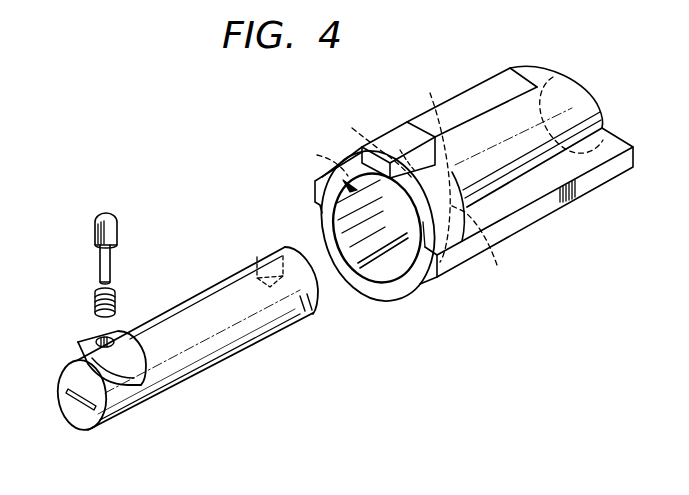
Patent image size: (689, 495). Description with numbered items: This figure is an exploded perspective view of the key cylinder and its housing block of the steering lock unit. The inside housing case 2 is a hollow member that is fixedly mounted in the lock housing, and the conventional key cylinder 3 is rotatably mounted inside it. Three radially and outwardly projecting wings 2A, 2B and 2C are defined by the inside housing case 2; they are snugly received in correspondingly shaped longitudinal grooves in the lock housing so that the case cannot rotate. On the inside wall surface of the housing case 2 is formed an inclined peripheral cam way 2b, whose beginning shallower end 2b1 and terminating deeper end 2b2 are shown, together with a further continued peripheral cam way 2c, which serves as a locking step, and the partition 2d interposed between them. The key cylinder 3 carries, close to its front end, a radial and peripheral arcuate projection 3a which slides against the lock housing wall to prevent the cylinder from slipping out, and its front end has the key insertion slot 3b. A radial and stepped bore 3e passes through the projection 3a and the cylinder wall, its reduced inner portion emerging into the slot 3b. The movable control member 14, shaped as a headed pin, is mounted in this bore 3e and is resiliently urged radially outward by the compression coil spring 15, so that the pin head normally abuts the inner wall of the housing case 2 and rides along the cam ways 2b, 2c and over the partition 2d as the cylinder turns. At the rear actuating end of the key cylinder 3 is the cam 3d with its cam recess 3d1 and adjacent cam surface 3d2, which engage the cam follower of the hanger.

The inside housing case 2 is at (493, 72).
The wing 2A is at (315, 197).
The wing 2B is at (428, 268).
The wing 2C is at (382, 143).
The inclined peripheral cam way 2b is at (320, 158).
The beginning shallower end of cam way 2b1 is at (366, 145).
The terminating deeper end of cam way 2b2 is at (487, 248).
The peripheral cam way 2c is at (434, 163).
The partition 2d is at (395, 152).
The key cylinder 3 is at (217, 361).
The radial and peripheral projection 3a is at (132, 370).
The key insertion slot 3b is at (84, 410).
The cam 3d is at (304, 308).
The cam recess 3d1 is at (274, 256).
The end face 3d2 is at (303, 279).
The radial and stepped bore 3e is at (100, 338).
The movable control member 14 is at (115, 233).
The compression coil spring 15 is at (117, 297).